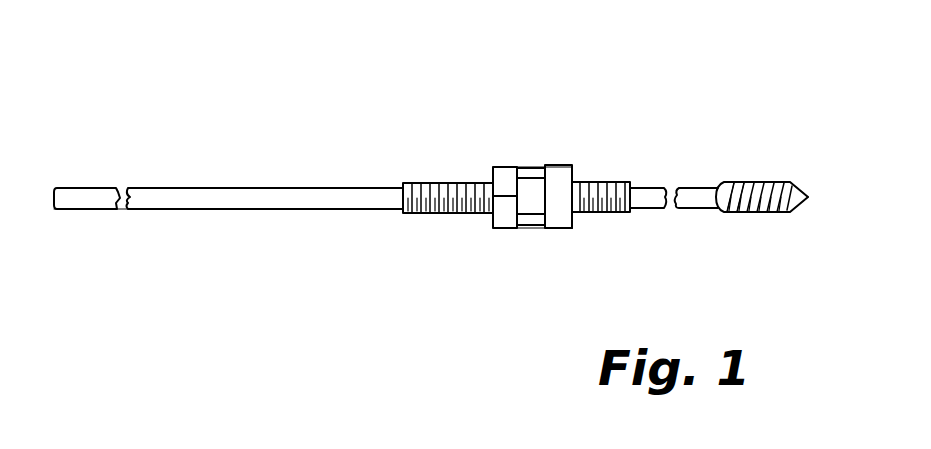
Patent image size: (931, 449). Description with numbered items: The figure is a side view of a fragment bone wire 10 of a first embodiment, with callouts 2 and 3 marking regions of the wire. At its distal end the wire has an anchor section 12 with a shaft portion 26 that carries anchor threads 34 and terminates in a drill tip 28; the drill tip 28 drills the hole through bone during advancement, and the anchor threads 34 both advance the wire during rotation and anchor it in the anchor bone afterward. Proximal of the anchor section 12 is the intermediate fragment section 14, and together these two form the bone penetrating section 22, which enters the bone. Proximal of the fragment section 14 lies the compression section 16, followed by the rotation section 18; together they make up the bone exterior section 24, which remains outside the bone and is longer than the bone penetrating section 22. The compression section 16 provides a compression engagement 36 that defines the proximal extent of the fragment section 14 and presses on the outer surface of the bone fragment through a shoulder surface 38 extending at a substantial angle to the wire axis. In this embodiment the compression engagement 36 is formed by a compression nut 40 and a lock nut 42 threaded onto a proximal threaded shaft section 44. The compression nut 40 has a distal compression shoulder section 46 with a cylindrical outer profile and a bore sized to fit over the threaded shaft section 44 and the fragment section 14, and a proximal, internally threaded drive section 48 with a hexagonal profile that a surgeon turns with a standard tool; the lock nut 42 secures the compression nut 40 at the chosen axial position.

The fragment bone wire 10 is at (106, 150).
The rotation section 18 is at (52, 221).
The proximal threaded shaft section 44 is at (440, 183).
The lock nut 42 is at (497, 167).
The compression nut 40 is at (540, 168).
The compression engagement 36 is at (568, 165).
The compression shoulder section 46 is at (573, 174).
The shoulder surface 38 is at (573, 223).
The drive section 48 is at (528, 228).
The compression section 16 is at (622, 243).
The detail section 3 is at (603, 90).
The bone exterior section 24 is at (48, 284).
The intermediate fragment section 14 is at (718, 234).
The anchor section 12 is at (812, 226).
The bone penetrating section 22 is at (812, 273).
The anchor threads 34 is at (745, 160).
The detail section 2 is at (742, 172).
The shaft portion 26 is at (790, 188).
The drill tip 28 is at (800, 197).